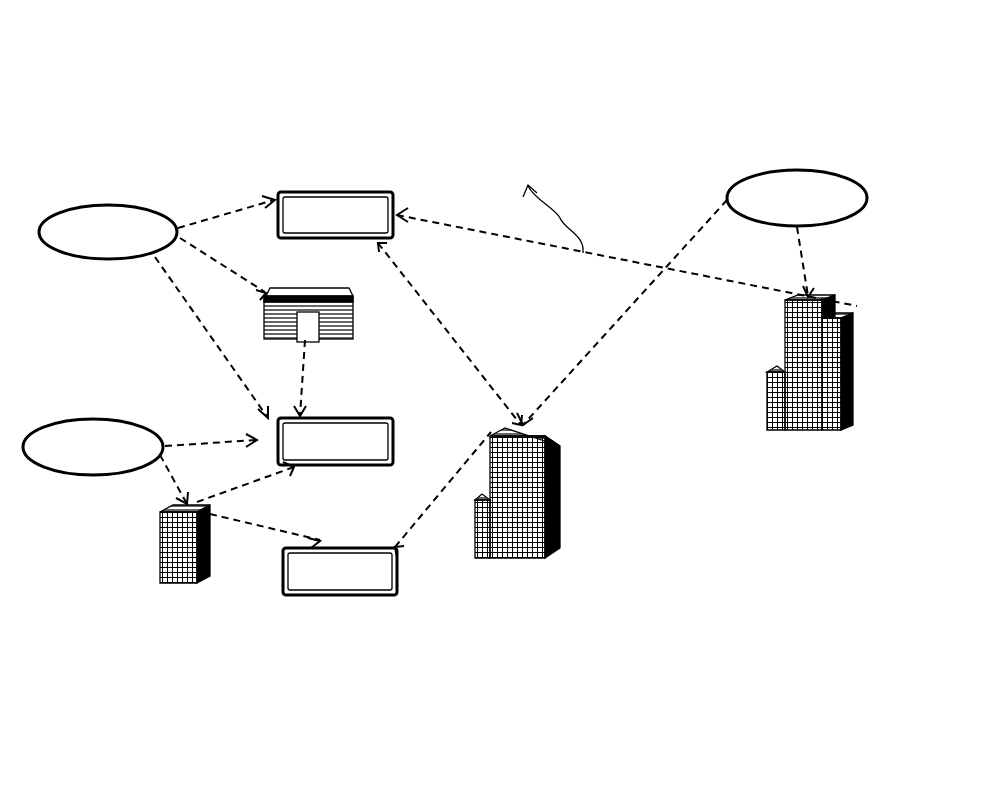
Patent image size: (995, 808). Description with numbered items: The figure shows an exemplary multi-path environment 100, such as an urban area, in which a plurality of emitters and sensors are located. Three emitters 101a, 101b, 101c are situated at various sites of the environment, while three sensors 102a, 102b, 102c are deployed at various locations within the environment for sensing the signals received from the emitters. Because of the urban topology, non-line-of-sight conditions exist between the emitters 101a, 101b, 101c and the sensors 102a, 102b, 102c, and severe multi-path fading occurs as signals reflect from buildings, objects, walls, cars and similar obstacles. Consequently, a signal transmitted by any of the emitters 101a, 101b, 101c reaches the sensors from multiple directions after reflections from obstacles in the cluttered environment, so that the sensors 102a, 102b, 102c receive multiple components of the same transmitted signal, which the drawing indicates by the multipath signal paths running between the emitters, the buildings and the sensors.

The multi-path environment 100 is at (594, 71).
The emitter 101a is at (108, 205).
The emitter 101b is at (831, 146).
The emitter 101c is at (47, 425).
The sensor 102a is at (360, 184).
The sensor 102b is at (346, 372).
The sensor 102c is at (345, 595).